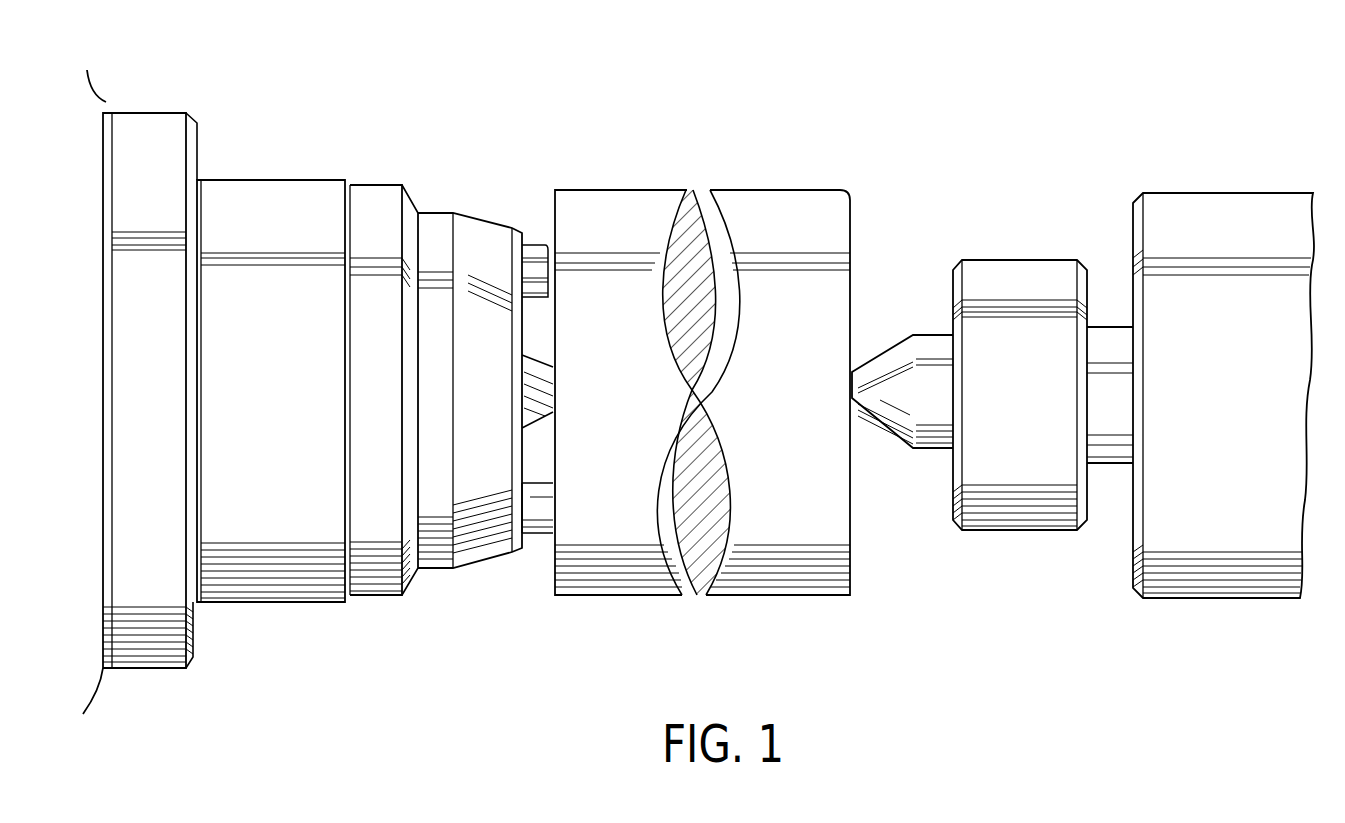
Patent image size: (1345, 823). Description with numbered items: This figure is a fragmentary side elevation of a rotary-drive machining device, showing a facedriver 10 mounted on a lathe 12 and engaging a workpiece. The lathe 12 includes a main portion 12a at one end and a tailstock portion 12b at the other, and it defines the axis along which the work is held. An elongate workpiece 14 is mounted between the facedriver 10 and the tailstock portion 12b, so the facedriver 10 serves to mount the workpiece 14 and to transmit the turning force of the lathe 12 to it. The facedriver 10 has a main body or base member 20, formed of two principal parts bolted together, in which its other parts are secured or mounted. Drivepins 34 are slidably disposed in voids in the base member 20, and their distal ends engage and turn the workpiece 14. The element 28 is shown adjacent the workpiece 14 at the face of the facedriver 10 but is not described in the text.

The facedriver 10 is at (375, 193).
The lathe 12 is at (243, 148).
The main portion 12a is at (158, 127).
The tailstock portion 12b is at (898, 353).
The elongate workpiece 14 is at (758, 205).
The base member 20 is at (472, 568).
The conical seal tip 28 is at (546, 372).
The drivepins 34 is at (545, 490).